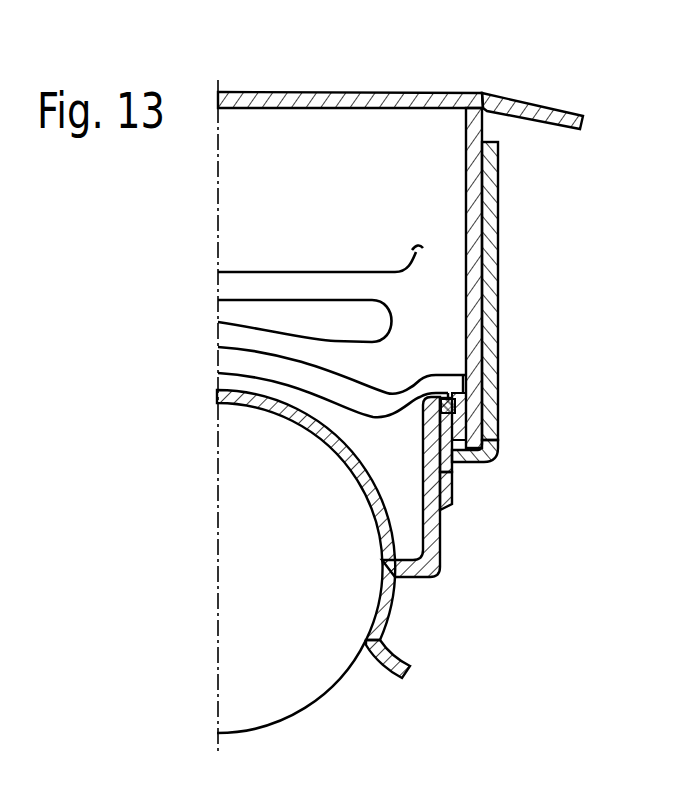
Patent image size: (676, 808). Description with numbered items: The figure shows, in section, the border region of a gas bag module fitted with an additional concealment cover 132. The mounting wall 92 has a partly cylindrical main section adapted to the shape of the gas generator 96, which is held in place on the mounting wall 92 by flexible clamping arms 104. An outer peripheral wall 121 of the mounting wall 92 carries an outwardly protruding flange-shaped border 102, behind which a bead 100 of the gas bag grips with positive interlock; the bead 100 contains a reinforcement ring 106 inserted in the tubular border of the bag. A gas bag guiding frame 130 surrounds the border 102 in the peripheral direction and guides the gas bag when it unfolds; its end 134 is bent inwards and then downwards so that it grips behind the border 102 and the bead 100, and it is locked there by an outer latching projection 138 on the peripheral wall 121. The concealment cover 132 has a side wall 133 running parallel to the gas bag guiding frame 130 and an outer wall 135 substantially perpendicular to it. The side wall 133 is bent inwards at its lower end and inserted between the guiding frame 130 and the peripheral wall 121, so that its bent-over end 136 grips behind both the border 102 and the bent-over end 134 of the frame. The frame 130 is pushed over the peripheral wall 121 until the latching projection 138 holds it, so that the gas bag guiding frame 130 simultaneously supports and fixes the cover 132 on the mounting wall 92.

The mounting wall 92 is at (252, 400).
The gas generator 96 is at (343, 680).
The bead 100 is at (457, 413).
The border 102 is at (486, 370).
The clamping arms 104 is at (410, 666).
The reinforcement ring 106 is at (462, 390).
The peripheral wall 121 is at (423, 478).
The gas bag guiding frame 130 is at (489, 200).
The concealment cover 132 is at (519, 94).
The side wall 133 is at (467, 184).
The bent-over end 134 is at (452, 482).
The outer wall 135 is at (339, 92).
The bent-over end 136 is at (480, 452).
The latching projection 138 is at (446, 515).